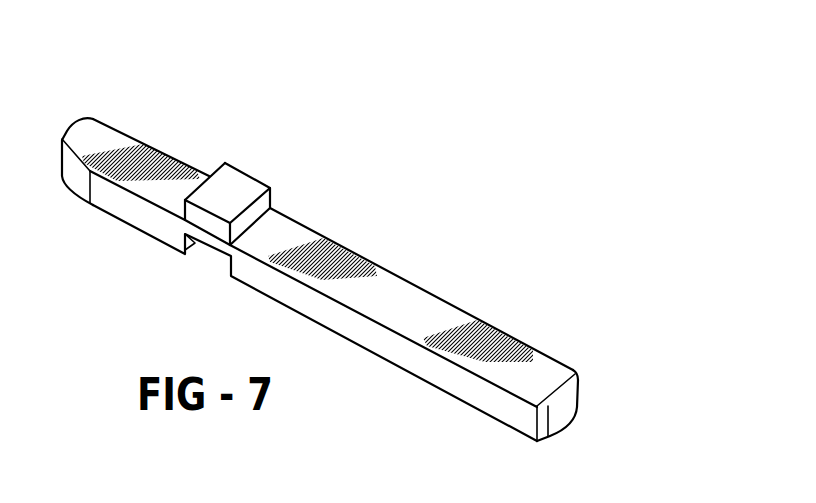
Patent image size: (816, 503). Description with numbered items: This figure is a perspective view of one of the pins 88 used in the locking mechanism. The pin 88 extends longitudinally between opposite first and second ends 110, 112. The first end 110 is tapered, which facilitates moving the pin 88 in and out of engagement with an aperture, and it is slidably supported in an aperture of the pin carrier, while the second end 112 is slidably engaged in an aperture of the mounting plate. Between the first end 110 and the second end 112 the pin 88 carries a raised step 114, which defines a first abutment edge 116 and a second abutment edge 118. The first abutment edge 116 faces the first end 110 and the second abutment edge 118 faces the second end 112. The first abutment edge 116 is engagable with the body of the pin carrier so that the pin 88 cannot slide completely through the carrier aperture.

The pin 88 is at (434, 193).
The first end 110 is at (97, 127).
The second end 112 is at (579, 390).
The raised step 114 is at (258, 191).
The first abutment edge 116 is at (200, 181).
The second abutment edge 118 is at (252, 220).